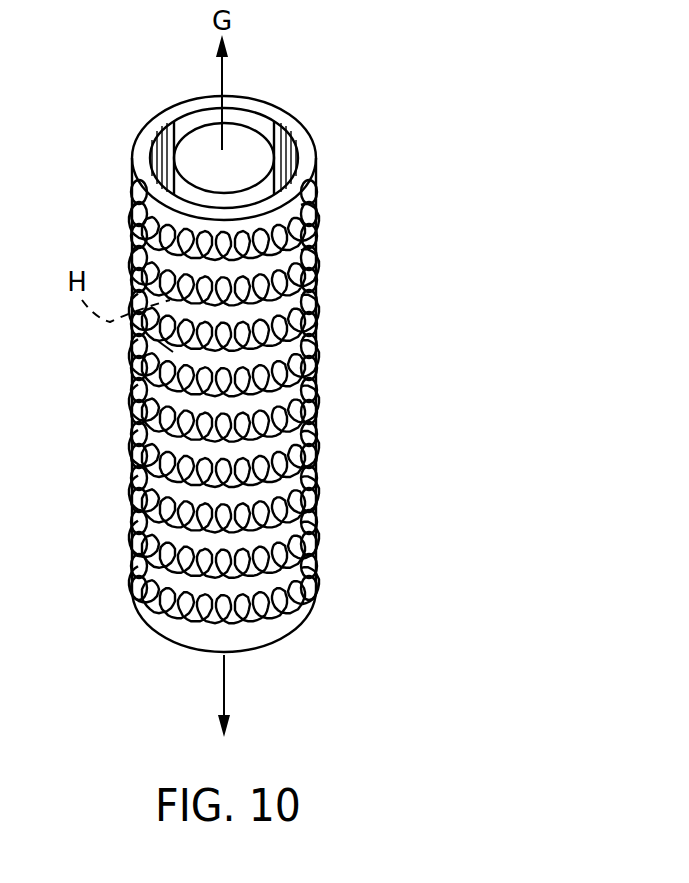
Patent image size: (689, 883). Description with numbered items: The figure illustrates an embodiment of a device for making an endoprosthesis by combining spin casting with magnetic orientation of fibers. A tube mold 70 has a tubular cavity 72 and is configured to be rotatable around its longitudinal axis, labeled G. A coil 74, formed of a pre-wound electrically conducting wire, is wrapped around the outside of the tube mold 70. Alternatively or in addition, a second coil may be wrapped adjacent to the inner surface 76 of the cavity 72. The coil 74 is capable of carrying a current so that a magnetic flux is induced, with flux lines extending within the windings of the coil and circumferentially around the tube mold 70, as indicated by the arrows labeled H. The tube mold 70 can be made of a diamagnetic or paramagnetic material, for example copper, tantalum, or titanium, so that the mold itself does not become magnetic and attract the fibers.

The tube mold 70 is at (400, 166).
The tubular cavity 72 is at (276, 130).
The coil 74 is at (323, 286).
The inner surface 76 is at (186, 142).